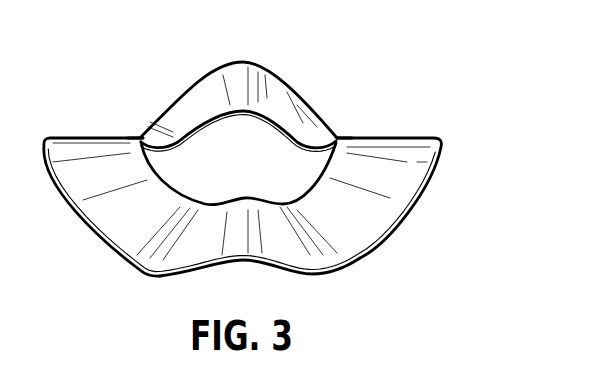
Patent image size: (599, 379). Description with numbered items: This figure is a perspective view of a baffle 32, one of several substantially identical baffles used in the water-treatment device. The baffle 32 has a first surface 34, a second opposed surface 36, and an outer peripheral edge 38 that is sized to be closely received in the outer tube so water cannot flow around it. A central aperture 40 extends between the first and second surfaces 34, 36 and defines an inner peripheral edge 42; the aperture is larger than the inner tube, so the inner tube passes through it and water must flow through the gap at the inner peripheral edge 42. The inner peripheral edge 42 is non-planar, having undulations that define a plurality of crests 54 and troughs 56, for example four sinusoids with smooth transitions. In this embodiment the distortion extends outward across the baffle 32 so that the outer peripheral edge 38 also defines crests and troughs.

The baffle 32 is at (368, 81).
The first surface 34 is at (383, 175).
The second opposed surface 36 is at (103, 247).
The outer peripheral edge 38 is at (333, 271).
The central aperture 40 is at (281, 142).
The inner peripheral edge 42 is at (214, 121).
The crests 54 is at (138, 137).
The troughs 56 is at (176, 138).